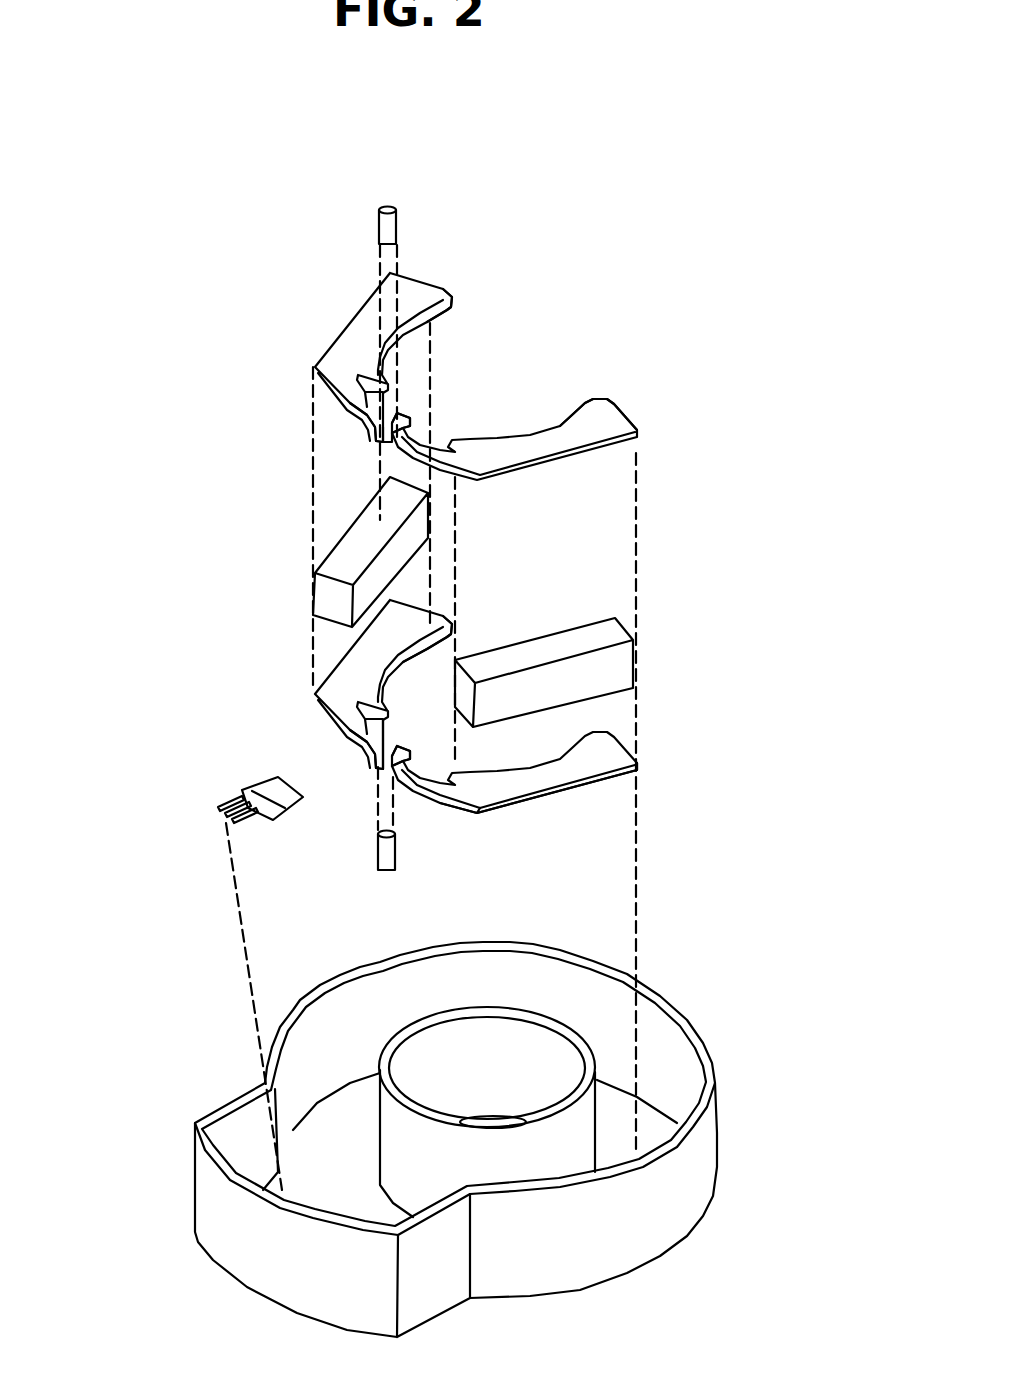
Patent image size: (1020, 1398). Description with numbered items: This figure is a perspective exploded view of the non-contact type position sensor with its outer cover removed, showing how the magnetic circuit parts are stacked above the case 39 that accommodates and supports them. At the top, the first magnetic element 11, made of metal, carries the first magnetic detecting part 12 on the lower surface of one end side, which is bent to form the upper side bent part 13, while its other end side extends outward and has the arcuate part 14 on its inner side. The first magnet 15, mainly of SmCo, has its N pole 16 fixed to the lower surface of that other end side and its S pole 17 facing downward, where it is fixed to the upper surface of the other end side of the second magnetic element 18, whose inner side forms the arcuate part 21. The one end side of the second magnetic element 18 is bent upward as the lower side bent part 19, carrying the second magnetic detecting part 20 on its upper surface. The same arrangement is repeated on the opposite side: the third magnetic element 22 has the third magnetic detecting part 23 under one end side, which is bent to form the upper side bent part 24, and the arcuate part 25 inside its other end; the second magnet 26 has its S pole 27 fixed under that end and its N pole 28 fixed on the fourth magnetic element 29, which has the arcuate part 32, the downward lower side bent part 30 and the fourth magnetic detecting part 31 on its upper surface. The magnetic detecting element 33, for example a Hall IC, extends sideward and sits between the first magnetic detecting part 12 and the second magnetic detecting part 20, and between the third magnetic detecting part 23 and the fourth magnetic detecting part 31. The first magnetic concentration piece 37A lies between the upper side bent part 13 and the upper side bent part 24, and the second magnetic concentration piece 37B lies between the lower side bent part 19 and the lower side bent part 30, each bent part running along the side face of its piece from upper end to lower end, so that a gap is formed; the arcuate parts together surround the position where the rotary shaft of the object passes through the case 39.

The first magnetic element 11 is at (597, 430).
The first magnetic detecting part 12 is at (397, 447).
The upper side bent part 13 is at (415, 420).
The arcuate part 14 is at (560, 428).
The first magnet 15 is at (602, 675).
The N pole 16 is at (620, 650).
The S pole 17 is at (567, 693).
The second magnetic element 18 is at (597, 762).
The lower side bent part 19 is at (380, 777).
The second magnetic detecting part 20 is at (475, 807).
The arcuate part 21 is at (600, 780).
The third magnetic element 22 is at (363, 318).
The third magnetic detecting part 23 is at (383, 443).
The upper side bent part 24 is at (367, 428).
The arcuate part 25 is at (447, 290).
The second magnet 26 is at (357, 542).
The S pole 27 is at (407, 533).
The N pole 28 is at (413, 558).
The fourth magnetic element 29 is at (350, 690).
The lower side bent part 30 is at (362, 758).
The fourth magnetic detecting part 31 is at (352, 735).
The arcuate part 32 is at (400, 655).
The magnetic detecting element 33 is at (233, 803).
The first magnetic concentration piece 37A is at (380, 233).
The second magnetic concentration piece 37B is at (383, 857).
The case 39 is at (230, 1232).